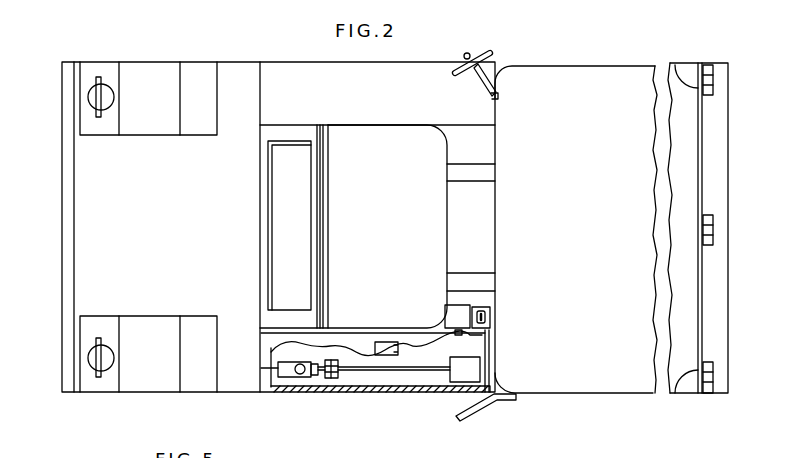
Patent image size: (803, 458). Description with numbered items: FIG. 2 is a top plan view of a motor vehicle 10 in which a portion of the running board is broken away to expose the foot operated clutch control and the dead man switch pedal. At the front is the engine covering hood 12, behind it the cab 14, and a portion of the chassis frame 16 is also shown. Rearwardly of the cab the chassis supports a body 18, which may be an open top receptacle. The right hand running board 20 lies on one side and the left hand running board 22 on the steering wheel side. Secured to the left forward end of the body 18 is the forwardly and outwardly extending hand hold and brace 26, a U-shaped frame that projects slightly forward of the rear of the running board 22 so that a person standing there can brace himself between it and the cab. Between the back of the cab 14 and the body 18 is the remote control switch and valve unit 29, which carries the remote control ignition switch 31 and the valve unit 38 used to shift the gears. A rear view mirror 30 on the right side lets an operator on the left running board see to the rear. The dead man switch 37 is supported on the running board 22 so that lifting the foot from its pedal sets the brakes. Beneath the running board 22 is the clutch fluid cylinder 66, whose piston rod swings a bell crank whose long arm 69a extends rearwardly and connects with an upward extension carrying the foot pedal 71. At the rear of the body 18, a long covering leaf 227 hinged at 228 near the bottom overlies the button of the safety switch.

The motor vehicle 10 is at (62, 97).
The engine covering hood 12 is at (97, 274).
The cab 14 is at (358, 130).
The chassis frame 16 is at (472, 183).
The body 18 is at (617, 373).
The right hand running board 20 is at (415, 75).
The left hand running board 22 is at (470, 337).
The hand hold and brace 26 is at (477, 419).
The remote control switch and valve unit 29 is at (455, 318).
The rear view mirror 30 is at (493, 52).
The remote control ignition switch 31 is at (480, 85).
The dead man switch 37 is at (383, 340).
The valve unit 38 is at (492, 315).
The fluid cylinder 66 is at (290, 363).
The bell crank arm 69a is at (428, 375).
The foot pedal 71 is at (470, 372).
The covering leaf 227 is at (712, 350).
The hinge 228 is at (710, 83).